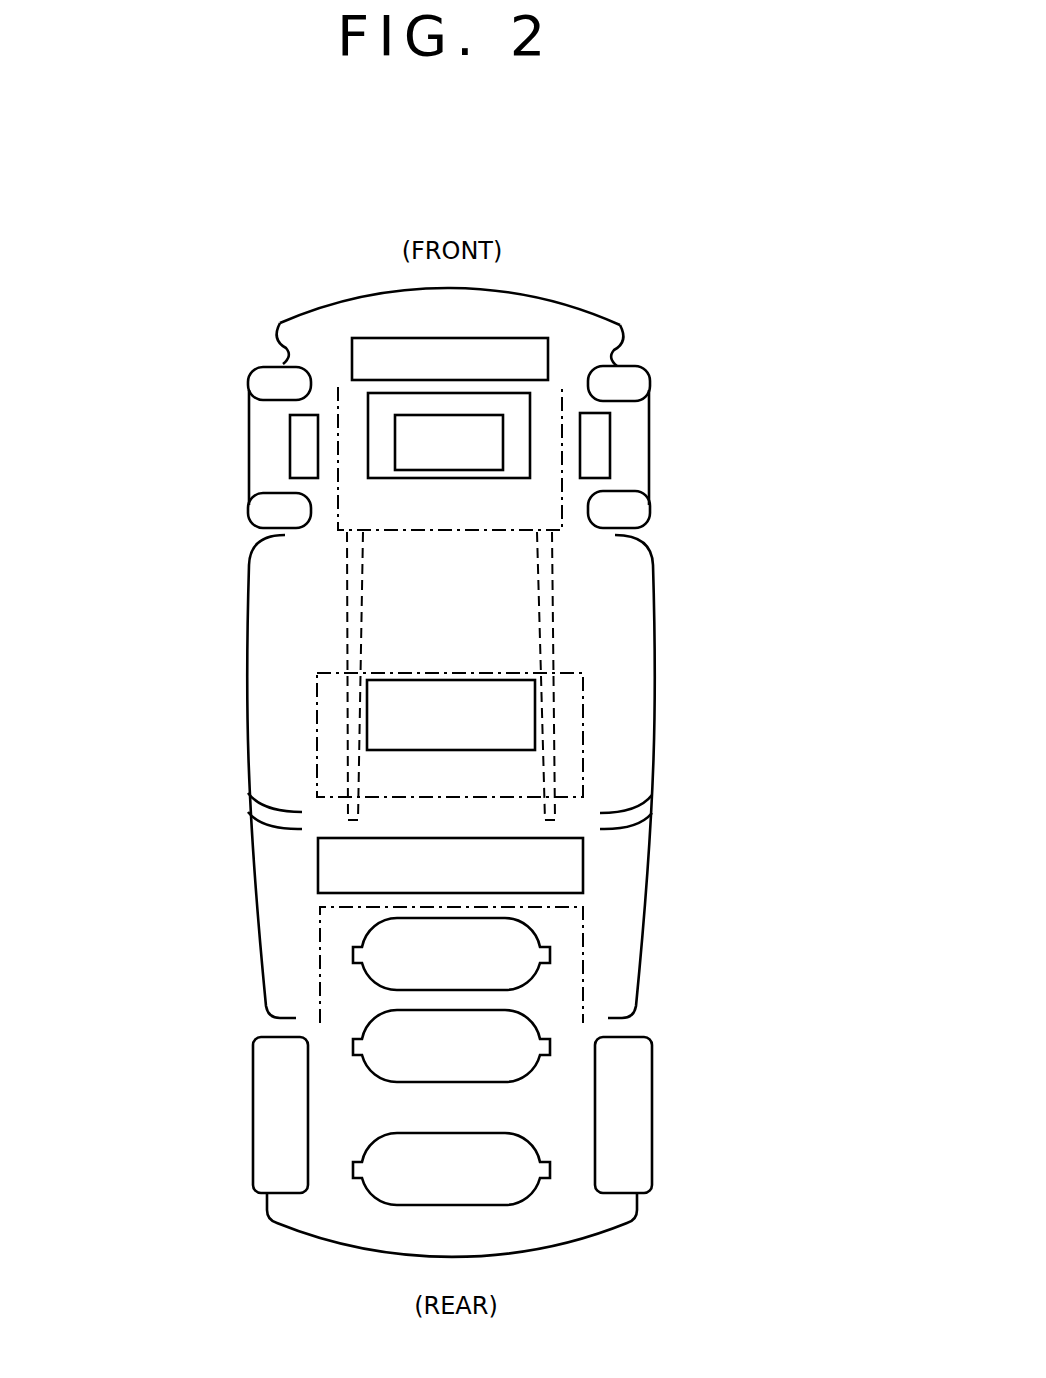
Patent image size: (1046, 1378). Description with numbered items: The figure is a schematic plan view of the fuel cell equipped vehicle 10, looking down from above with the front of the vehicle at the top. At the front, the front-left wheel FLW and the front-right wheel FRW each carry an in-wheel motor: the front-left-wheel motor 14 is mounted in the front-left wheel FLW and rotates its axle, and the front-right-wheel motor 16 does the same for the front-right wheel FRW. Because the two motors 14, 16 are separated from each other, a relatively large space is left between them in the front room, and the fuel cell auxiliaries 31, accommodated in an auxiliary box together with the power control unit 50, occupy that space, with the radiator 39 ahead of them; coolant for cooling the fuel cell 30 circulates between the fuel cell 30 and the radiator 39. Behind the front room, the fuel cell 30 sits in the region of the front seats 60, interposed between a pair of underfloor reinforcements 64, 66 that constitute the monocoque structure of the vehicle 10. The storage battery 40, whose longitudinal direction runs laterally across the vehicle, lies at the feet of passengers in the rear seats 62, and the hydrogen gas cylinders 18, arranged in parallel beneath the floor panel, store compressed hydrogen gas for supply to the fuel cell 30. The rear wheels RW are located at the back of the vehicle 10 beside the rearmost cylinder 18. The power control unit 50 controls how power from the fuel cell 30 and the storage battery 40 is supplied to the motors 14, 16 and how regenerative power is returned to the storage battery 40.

The fuel cell equipped vehicle 10 is at (462, 772).
The front-left-wheel motor 14 is at (300, 443).
The front-right-wheel motor 16 is at (598, 453).
The hydrogen gas cylinder 18 is at (388, 955).
The fuel cell 30 is at (395, 715).
The fuel cell auxiliaries 31 is at (390, 402).
The radiator 39 is at (420, 352).
The storage battery 40 is at (337, 867).
The power control unit 50 is at (462, 435).
The front seats 60 is at (585, 731).
The rear seats 62 is at (585, 963).
The underfloor reinforcement 64 is at (347, 622).
The underfloor reinforcement 66 is at (552, 617).
The front-left wheel FLW is at (248, 449).
The front-right wheel FRW is at (652, 430).
The rear wheel RW is at (273, 1130).